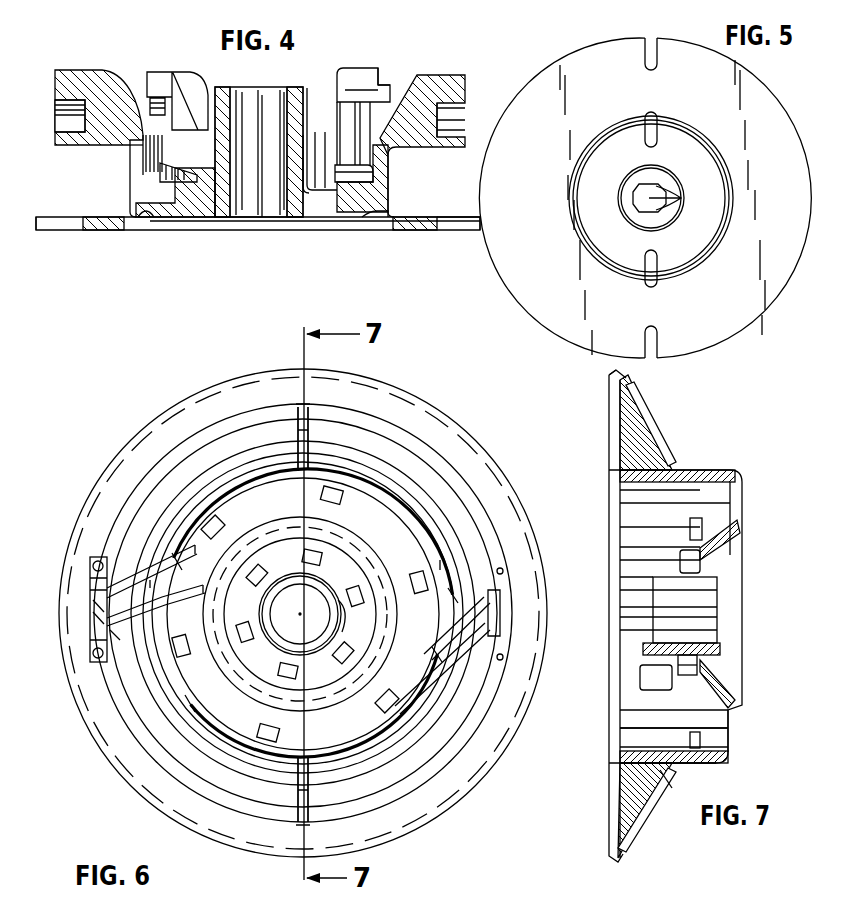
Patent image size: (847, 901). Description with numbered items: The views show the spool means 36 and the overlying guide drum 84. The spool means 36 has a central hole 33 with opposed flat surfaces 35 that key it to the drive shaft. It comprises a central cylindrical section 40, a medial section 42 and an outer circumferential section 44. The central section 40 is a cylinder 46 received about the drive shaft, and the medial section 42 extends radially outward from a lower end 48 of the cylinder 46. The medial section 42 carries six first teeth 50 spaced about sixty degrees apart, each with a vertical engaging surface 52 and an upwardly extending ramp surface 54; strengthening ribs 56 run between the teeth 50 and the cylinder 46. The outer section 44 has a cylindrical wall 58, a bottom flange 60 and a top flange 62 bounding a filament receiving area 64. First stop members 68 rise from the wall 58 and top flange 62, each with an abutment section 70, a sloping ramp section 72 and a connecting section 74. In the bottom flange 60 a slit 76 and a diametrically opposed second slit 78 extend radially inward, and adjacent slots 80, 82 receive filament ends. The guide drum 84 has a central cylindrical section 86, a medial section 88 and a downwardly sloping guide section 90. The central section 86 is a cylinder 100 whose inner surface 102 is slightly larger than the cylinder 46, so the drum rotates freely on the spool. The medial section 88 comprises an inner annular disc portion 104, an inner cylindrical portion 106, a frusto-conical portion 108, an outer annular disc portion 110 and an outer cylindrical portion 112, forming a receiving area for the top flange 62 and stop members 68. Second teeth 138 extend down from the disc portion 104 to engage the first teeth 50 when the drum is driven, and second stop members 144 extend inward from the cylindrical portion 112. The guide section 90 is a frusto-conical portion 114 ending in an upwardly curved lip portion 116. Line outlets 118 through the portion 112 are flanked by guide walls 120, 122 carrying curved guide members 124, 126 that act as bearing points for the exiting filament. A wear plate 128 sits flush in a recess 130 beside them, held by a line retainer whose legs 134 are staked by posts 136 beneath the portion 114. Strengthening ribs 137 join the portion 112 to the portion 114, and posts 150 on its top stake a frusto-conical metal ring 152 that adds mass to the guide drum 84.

In FIG. 5, the hole 33 is at (632, 198).
In FIG. 5, the flat surfaces 35 is at (683, 199).
In FIG. 4, the spool means 36 is at (138, 50).
In FIG. 4, the central cylindrical section 40 is at (216, 72).
In FIG. 4, the medial section 42 is at (198, 236).
In FIG. 4, the outer circumferential section 44 is at (112, 236).
In FIG. 4, the cylinder 46 is at (270, 205).
In FIG. 5, the cylinder 46 is at (672, 192).
In FIG. 4, the lower end 48 is at (222, 205).
In FIG. 4, the first teeth 50 is at (175, 172).
In FIG. 4, the engaging surface 52 is at (145, 180).
In FIG. 4, the upwardly extending surface 54 is at (372, 172).
In FIG. 4, the strengthening ribs 56 is at (320, 195).
In FIG. 4, the cylindrical wall 58 is at (138, 160).
In FIG. 4, the bottom flange 60 is at (53, 232).
In FIG. 4, the top flange 62 is at (75, 146).
In FIG. 4, the filament receiving area 64 is at (82, 183).
In FIG. 4, the first stop members 68 is at (95, 66).
In FIG. 4, the abutment section 70 is at (372, 74).
In FIG. 4, the ramp section 72 is at (385, 93).
In FIG. 4, the connecting section 74 is at (343, 122).
In FIG. 4, the slit 76 is at (451, 232).
In FIG. 5, the slit 76 is at (651, 37).
In FIG. 4, the second slit 78 is at (73, 232).
In FIG. 5, the second slit 78 is at (651, 358).
In FIG. 7, the second slit 78 is at (642, 372).
In FIG. 4, the slot 80 is at (385, 225).
In FIG. 5, the slot 80 is at (659, 116).
In FIG. 4, the slot 82 is at (148, 220).
In FIG. 5, the slot 82 is at (659, 266).
In FIG. 6, the guide drum 84 is at (476, 434).
In FIG. 7, the guide drum 84 is at (740, 458).
In FIG. 7, the central cylindrical section 86 is at (728, 595).
In FIG. 7, the medial section 88 is at (750, 715).
In FIG. 7, the guide section 90 is at (684, 777).
In FIG. 6, the cylinder 100 is at (286, 577).
In FIG. 7, the cylinder 100 is at (716, 648).
In FIG. 6, the inner surface 102 is at (328, 600).
In FIG. 7, the inner surface 102 is at (712, 607).
In FIG. 6, the inner annular disc portion 104 is at (358, 616).
In FIG. 7, the inner annular disc portion 104 is at (672, 670).
In FIG. 7, the inner cylindrical portion 106 is at (699, 669).
In FIG. 6, the frusto-conical portion 108 is at (333, 528).
In FIG. 7, the frusto-conical portion 108 is at (722, 700).
In FIG. 6, the outer annular disc portion 110 is at (428, 630).
In FIG. 7, the outer annular disc portion 110 is at (736, 742).
In FIG. 6, the outer cylindrical portion 112 is at (326, 748).
In FIG. 7, the outer cylindrical portion 112 is at (724, 762).
In FIG. 6, the frusto-conical portion 114 is at (170, 769).
In FIG. 7, the frusto-conical portion 114 is at (610, 830).
In FIG. 6, the lip portion 116 is at (440, 800).
In FIG. 7, the lip portion 116 is at (606, 851).
In FIG. 6, the line outlets 118 is at (174, 561).
In FIG. 6, the line guide wall 120 is at (130, 555).
In FIG. 6, the line guide wall 122 is at (152, 622).
In FIG. 6, the curved guide member 124 is at (133, 570).
In FIG. 6, the curved guide member 126 is at (138, 645).
In FIG. 6, the wear plate 128 is at (80, 580).
In FIG. 6, the recess 130 is at (512, 604).
In FIG. 6, the legs 134 is at (120, 662).
In FIG. 6, the post 136 is at (96, 562).
In FIG. 6, the strengthening ribs 137 is at (310, 418).
In FIG. 6, the second teeth 138 is at (245, 612).
In FIG. 6, the second stop members 144 is at (322, 496).
In FIG. 7, the second stop members 144 is at (689, 530).
In FIG. 7, the posts 150 is at (656, 432).
In FIG. 7, the ring 152 is at (641, 410).